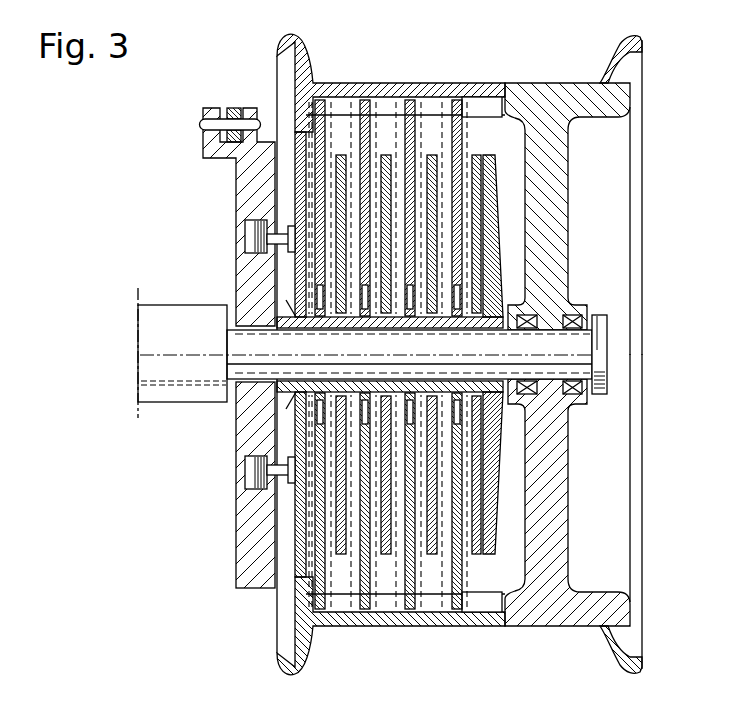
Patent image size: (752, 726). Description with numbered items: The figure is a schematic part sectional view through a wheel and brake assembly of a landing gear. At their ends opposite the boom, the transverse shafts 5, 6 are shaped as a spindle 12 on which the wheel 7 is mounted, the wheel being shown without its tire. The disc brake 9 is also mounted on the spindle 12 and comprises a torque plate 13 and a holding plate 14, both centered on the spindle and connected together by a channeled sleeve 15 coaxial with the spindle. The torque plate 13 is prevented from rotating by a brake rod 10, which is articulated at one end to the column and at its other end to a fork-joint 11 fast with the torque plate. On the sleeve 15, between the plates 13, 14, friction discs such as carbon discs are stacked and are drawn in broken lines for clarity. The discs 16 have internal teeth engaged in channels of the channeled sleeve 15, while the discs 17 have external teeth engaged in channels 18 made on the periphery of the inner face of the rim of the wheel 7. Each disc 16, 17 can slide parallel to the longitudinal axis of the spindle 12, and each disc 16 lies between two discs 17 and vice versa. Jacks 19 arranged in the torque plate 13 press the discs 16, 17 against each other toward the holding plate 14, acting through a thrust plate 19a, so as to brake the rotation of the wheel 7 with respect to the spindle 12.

The transverse shaft 5 is at (149, 353).
The transverse shaft 6 is at (177, 349).
The wheel 7 is at (545, 212).
The disc brake 9 is at (224, 396).
The brake rod 10 is at (232, 106).
The fork-joint 11 is at (210, 107).
The spindle 12 is at (373, 354).
The torque plate 13 is at (256, 533).
The holding plate 14 is at (490, 470).
The channeled sleeve 15 is at (288, 308).
The friction disc 16 is at (408, 420).
The friction disc 17 is at (388, 392).
The channel 18 is at (485, 662).
The jack 19 is at (245, 223).
The thrust plate 19a is at (298, 176).